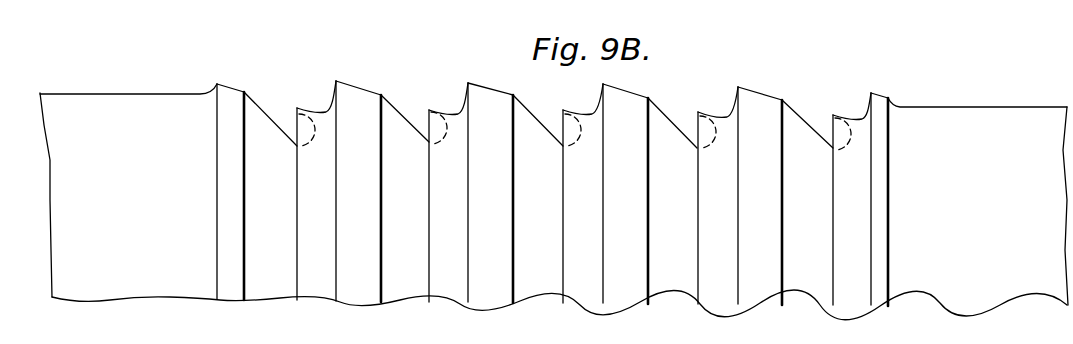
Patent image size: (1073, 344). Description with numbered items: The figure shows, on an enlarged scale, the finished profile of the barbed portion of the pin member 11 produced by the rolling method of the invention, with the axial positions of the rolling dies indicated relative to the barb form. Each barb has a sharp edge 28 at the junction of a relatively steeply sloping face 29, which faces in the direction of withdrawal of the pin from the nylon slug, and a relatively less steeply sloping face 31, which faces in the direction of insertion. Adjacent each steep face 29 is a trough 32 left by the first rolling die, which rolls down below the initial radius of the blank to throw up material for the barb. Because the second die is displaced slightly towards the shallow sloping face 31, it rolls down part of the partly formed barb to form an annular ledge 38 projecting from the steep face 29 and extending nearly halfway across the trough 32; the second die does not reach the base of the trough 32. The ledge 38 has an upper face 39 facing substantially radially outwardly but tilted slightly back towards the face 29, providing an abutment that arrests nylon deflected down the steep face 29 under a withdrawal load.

The pin member 11 is at (902, 112).
The sharp edge 28 is at (778, 174).
The steeply sloping face 29 is at (738, 108).
The shallow sloping face 31 is at (763, 95).
The trough 32 is at (694, 134).
The ledge 38 is at (708, 118).
The upper face of ledge 39 is at (720, 118).